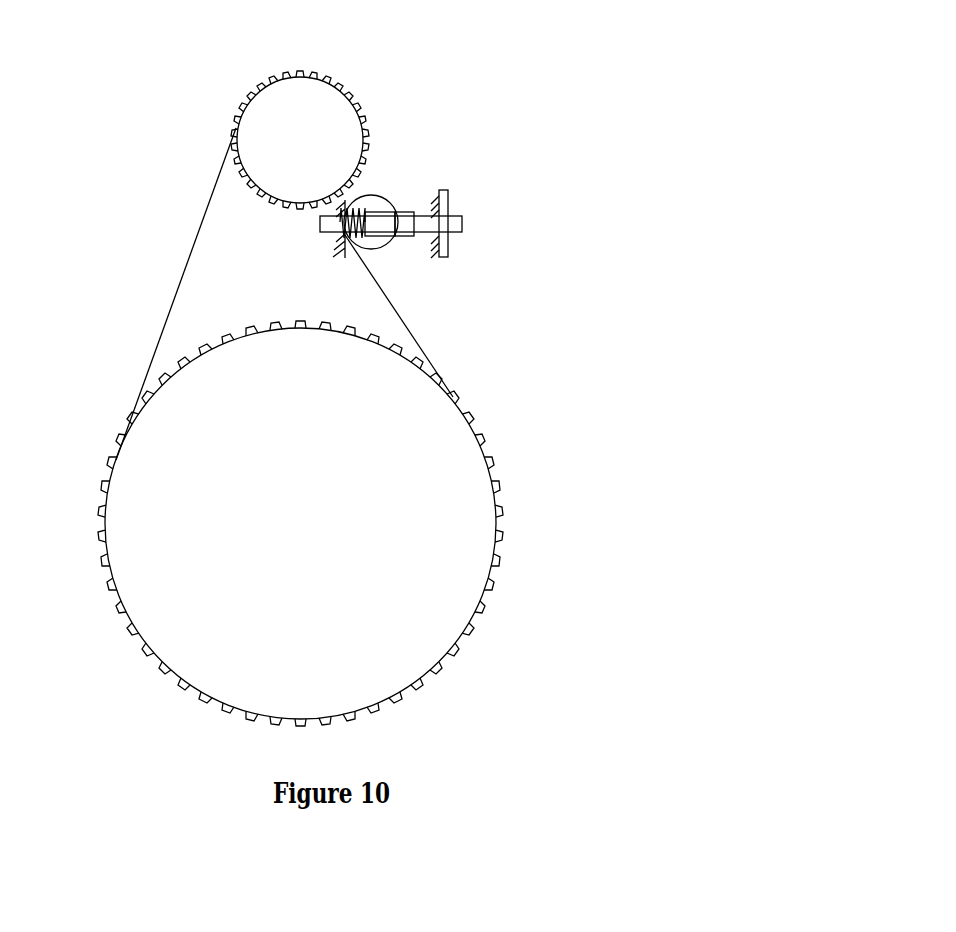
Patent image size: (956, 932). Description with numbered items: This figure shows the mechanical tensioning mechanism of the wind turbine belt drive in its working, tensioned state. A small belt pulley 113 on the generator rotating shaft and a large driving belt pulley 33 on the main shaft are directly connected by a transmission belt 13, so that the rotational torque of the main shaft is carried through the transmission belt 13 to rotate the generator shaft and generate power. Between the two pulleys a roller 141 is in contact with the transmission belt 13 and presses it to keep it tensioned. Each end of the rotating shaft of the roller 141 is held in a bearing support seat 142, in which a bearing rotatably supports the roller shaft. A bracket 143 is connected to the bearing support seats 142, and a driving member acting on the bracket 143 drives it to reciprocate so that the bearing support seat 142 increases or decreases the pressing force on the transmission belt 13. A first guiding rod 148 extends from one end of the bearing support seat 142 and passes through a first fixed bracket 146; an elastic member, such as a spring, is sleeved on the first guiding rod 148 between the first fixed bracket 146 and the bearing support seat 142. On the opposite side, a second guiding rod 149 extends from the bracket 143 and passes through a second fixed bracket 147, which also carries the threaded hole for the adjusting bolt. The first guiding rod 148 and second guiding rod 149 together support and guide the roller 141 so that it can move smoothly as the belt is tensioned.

The belt pulley 113 is at (300, 140).
The driving belt pulley 33 is at (327, 525).
The transmission belt 13 is at (394, 307).
The roller 141 is at (372, 196).
The bearing support seat 142 is at (388, 214).
The bracket 143 is at (405, 214).
The second fixed bracket 147 is at (447, 197).
The second guiding rod 149 is at (463, 224).
The first guiding rod 148 is at (322, 219).
The first fixed bracket 146 is at (327, 244).